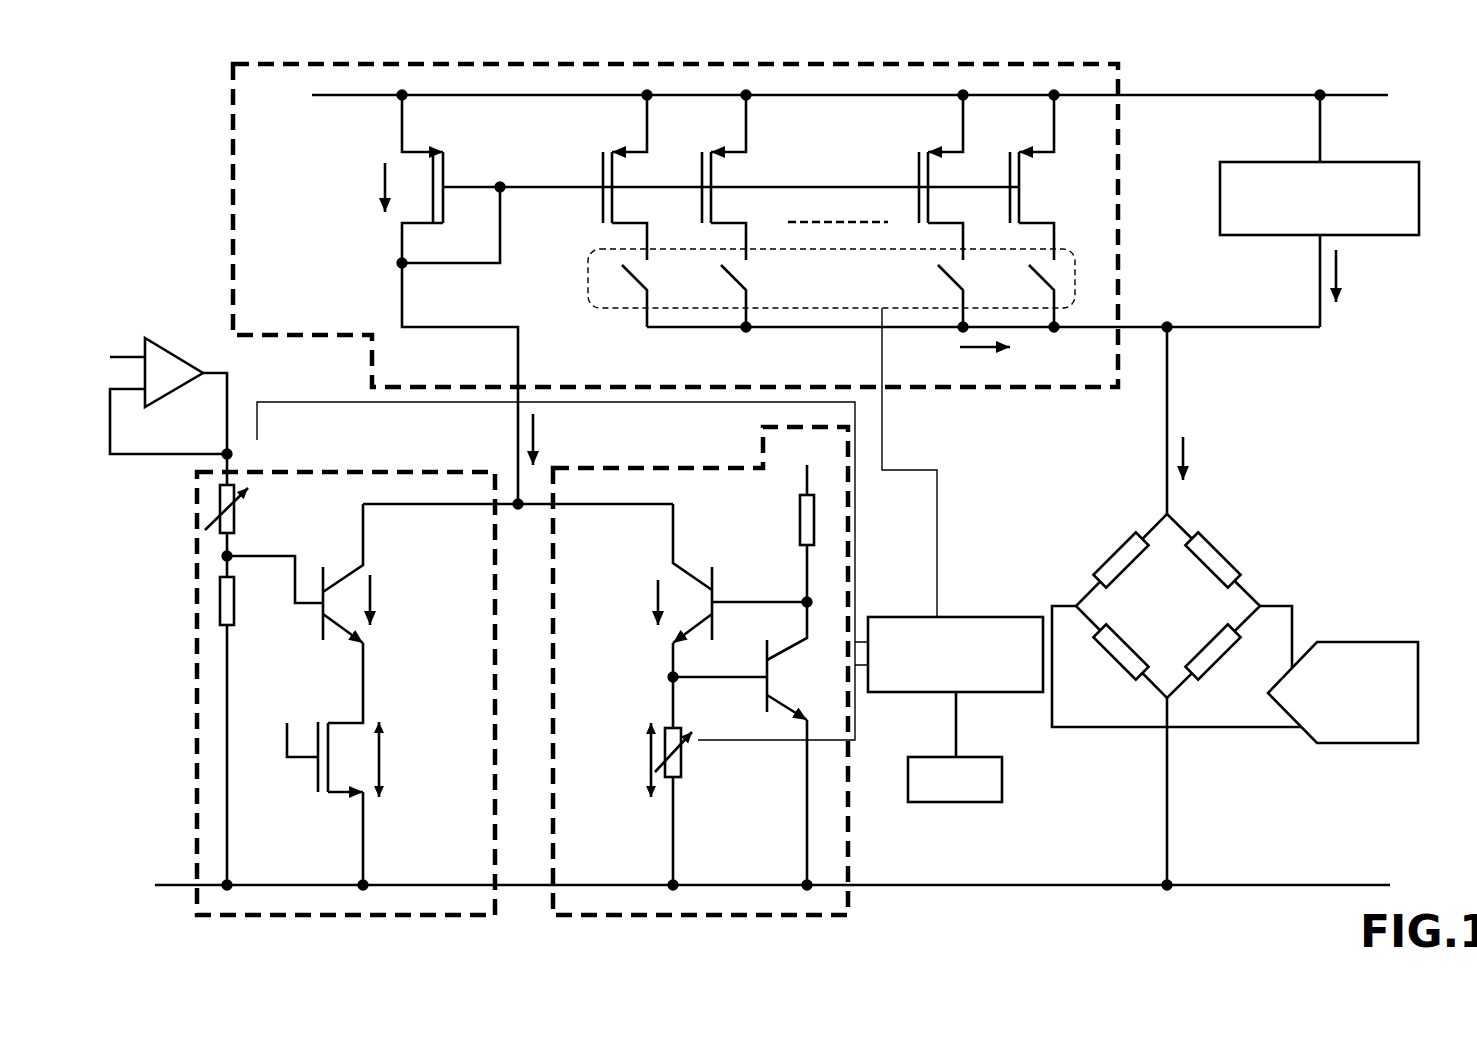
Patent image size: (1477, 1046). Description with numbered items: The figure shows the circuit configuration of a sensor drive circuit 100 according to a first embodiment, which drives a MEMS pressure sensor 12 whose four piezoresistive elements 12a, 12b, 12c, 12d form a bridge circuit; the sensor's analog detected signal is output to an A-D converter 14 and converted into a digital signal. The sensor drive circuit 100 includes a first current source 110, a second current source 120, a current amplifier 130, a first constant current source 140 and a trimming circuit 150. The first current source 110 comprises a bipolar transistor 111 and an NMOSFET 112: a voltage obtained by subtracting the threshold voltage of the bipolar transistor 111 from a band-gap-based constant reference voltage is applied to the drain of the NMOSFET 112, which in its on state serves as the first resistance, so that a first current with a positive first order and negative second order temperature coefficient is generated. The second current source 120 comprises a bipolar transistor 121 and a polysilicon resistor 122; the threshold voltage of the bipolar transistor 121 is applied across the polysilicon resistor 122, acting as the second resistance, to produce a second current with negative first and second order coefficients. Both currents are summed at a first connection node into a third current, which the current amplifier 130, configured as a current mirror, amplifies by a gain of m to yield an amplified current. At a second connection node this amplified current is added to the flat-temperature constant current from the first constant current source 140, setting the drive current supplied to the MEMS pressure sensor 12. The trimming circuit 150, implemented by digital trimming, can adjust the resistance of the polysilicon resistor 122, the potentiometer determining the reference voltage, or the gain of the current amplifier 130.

The sensor drive circuit 100 is at (1300, 69).
The current amplifier 130 is at (226, 160).
The first constant current source 140 is at (1410, 162).
The first current source 110 is at (375, 917).
The bipolar transistor 111 is at (307, 620).
The n-type metal-oxide-semiconductor field effect transistor 112 is at (343, 808).
The second current source 120 is at (752, 918).
The bipolar transistor 121 is at (762, 665).
The polysilicon resistor 122 is at (685, 797).
The trimming circuit 150 is at (1020, 617).
The MEMS pressure sensor 12 is at (1280, 578).
The piezoresistive element 12a is at (1112, 545).
The piezoresistive element 12b is at (1222, 553).
The piezoresistive element 12c is at (1208, 672).
The piezoresistive element 12d is at (1112, 665).
The A-D converter 14 is at (1368, 642).